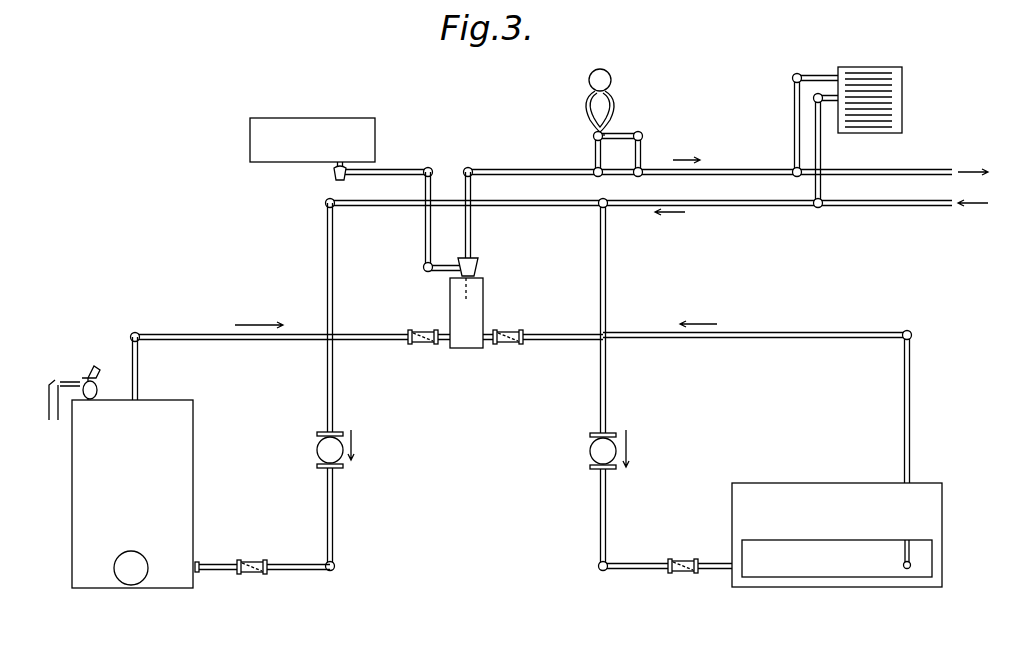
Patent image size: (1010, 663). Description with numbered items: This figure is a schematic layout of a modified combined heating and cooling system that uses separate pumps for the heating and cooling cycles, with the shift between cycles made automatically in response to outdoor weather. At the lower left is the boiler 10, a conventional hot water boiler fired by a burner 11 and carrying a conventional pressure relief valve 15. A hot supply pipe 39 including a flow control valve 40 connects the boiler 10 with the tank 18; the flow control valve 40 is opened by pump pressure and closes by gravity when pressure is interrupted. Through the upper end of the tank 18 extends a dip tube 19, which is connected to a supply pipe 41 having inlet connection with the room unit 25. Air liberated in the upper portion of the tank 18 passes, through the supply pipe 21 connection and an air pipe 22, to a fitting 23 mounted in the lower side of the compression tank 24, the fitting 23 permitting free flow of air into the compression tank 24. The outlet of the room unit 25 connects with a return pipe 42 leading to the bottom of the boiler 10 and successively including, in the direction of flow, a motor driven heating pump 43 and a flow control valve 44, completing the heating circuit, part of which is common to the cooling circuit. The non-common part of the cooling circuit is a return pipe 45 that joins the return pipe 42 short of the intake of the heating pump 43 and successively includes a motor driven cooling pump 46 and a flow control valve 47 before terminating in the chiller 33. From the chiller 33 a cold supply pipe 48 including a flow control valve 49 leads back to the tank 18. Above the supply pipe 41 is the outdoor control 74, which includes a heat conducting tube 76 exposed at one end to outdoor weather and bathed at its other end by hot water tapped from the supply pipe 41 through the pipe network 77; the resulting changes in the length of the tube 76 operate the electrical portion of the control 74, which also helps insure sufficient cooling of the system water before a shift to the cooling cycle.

The boiler 10 is at (183, 497).
The burner 11 is at (122, 583).
The pressure relief valve 15 is at (84, 378).
The tank 18 is at (476, 304).
The dip tube 19 is at (449, 290).
The supply pipe 21 is at (478, 264).
The pipe 22 is at (426, 228).
The fitting 23 is at (333, 173).
The compression tank 24 is at (374, 137).
The room unit 25 is at (900, 78).
The chiller 33 is at (804, 588).
The hot supply pipe 39 is at (185, 332).
The flow control valve 40 is at (423, 345).
The supply pipe 41 is at (548, 160).
The return pipe 42 is at (694, 207).
The heating pump 43 is at (338, 466).
The flow control valve 44 is at (254, 576).
The return pipe 45 is at (606, 290).
The cooling pump 46 is at (590, 452).
The flow control valve 47 is at (676, 577).
The cold supply pipe 48 is at (798, 337).
The flow control valve 49 is at (512, 345).
The outdoor control 74 is at (622, 86).
The heat conducting tube 76 is at (588, 80).
The pipe network 77 is at (640, 134).